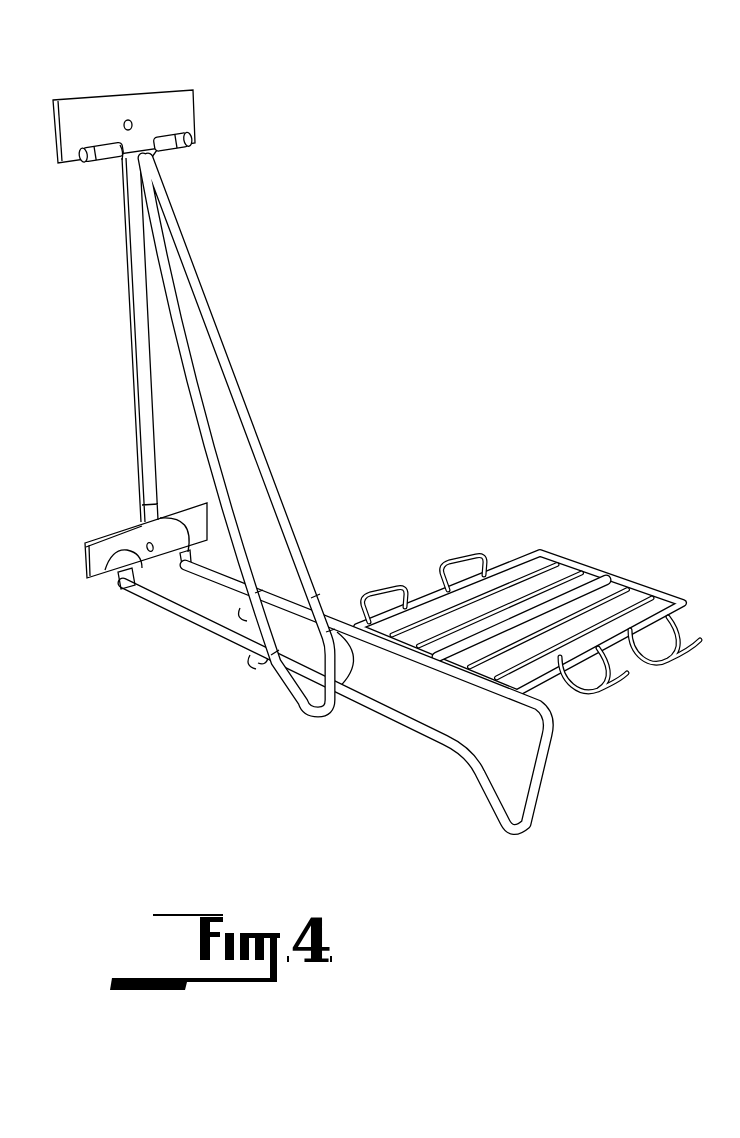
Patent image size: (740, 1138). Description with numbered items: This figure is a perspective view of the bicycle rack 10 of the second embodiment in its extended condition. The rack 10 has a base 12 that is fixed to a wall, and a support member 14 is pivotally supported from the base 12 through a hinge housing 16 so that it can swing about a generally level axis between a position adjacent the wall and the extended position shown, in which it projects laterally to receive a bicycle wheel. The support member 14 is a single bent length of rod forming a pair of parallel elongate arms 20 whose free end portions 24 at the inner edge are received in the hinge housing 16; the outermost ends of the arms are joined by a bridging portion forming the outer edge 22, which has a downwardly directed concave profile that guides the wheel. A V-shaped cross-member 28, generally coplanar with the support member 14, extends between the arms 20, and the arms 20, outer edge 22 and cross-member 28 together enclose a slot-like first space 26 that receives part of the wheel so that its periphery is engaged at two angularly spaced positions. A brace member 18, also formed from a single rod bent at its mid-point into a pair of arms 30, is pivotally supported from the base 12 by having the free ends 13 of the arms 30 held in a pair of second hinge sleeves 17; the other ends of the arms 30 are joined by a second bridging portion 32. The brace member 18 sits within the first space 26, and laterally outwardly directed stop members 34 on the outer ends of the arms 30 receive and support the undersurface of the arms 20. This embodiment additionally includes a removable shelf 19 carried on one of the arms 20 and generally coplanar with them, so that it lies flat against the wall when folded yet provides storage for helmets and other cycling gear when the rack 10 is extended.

The rack 10 is at (274, 364).
The base 12 is at (128, 359).
The free ends 13 is at (185, 150).
The support member 14 is at (371, 712).
The hinge housing 16 is at (104, 565).
The second hinge sleeves 17 is at (112, 142).
The brace member 18 is at (214, 302).
The removable shelf 19 is at (562, 548).
The elongate arms 20 is at (185, 597).
The outer edge 22 is at (371, 712).
The free end portions 24 is at (140, 505).
The first space 26 is at (450, 703).
The cross-member 28 is at (371, 712).
The arms 30 is at (251, 435).
The second bridging portion 32 is at (336, 722).
The stop member 34 is at (253, 663).